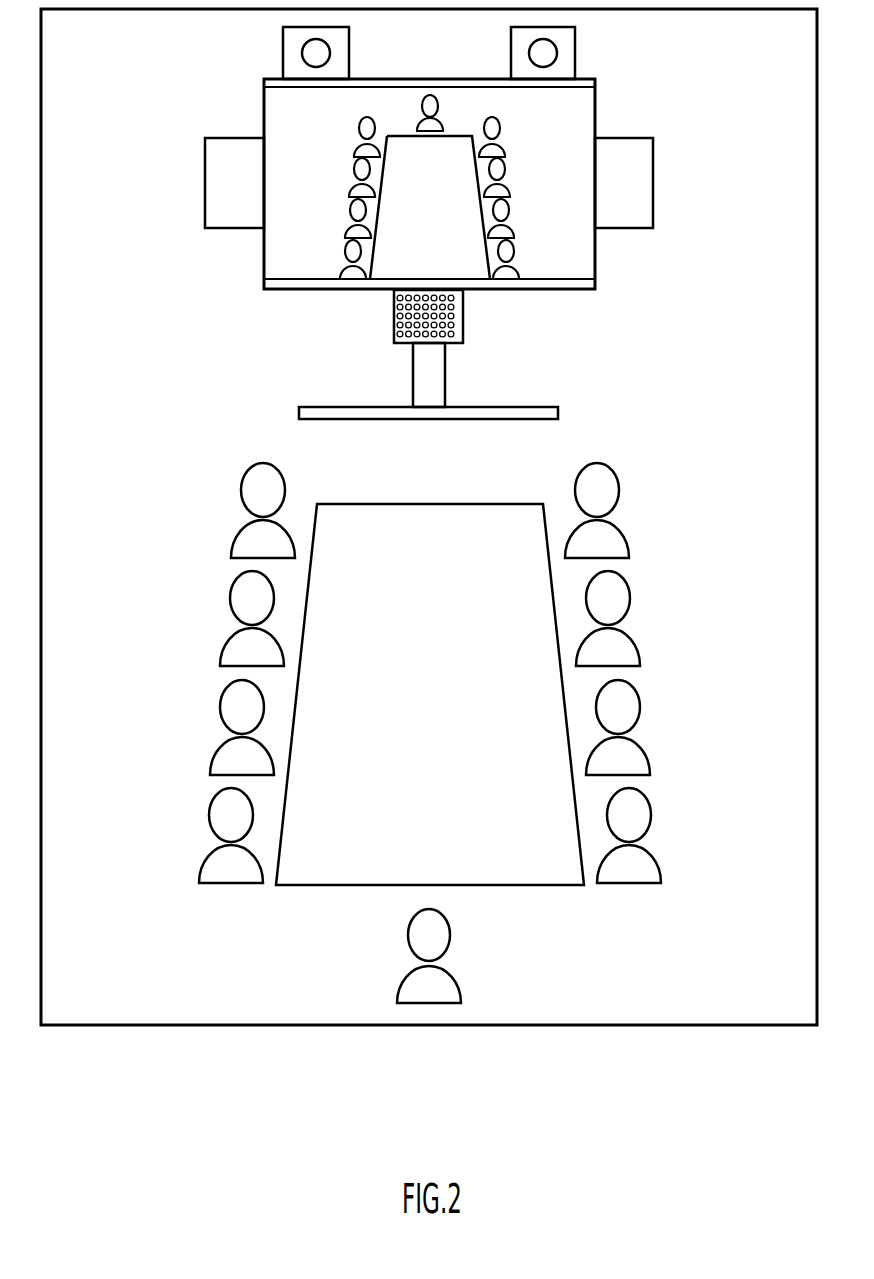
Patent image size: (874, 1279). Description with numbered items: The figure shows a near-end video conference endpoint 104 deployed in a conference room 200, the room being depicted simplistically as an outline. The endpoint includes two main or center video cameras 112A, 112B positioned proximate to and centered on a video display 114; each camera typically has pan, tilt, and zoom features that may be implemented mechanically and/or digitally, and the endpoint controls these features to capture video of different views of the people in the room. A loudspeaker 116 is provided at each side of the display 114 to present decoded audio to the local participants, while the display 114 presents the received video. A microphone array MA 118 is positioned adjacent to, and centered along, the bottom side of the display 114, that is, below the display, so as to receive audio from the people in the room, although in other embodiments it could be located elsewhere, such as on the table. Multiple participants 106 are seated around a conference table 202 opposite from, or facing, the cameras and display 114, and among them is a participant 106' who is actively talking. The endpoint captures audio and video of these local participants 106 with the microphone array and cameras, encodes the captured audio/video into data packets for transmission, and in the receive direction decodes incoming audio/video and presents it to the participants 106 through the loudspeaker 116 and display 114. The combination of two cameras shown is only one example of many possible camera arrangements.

The conference room 200 is at (731, 61).
The video conference endpoint 104 is at (417, 216).
The main video camera 112A is at (283, 53).
The main video camera 112B is at (575, 53).
The video display 114 is at (595, 129).
The loudspeaker 116 is at (205, 183).
The microphone array 118 is at (463, 314).
The microphone array MA is at (461, 341).
The conference table 202 is at (442, 712).
The participants 106 is at (444, 733).
The active speaker 106' is at (625, 617).